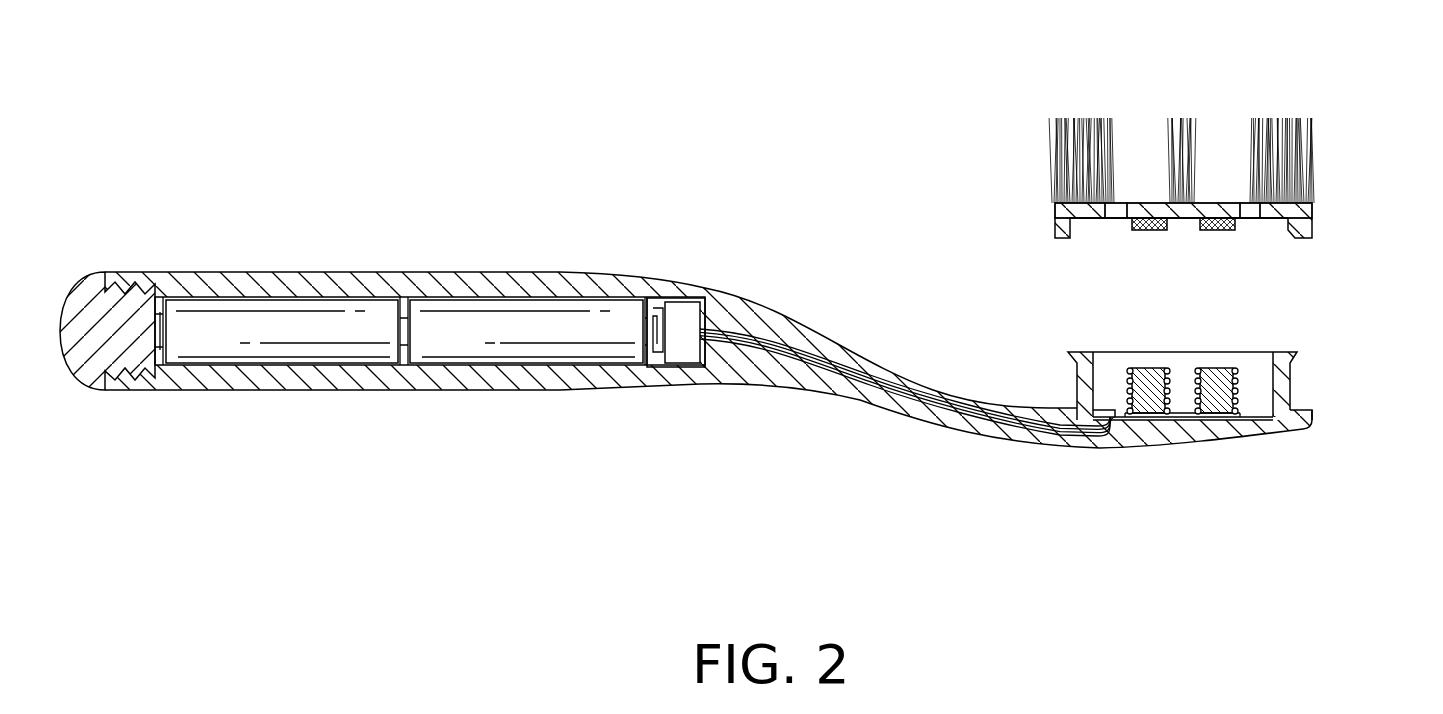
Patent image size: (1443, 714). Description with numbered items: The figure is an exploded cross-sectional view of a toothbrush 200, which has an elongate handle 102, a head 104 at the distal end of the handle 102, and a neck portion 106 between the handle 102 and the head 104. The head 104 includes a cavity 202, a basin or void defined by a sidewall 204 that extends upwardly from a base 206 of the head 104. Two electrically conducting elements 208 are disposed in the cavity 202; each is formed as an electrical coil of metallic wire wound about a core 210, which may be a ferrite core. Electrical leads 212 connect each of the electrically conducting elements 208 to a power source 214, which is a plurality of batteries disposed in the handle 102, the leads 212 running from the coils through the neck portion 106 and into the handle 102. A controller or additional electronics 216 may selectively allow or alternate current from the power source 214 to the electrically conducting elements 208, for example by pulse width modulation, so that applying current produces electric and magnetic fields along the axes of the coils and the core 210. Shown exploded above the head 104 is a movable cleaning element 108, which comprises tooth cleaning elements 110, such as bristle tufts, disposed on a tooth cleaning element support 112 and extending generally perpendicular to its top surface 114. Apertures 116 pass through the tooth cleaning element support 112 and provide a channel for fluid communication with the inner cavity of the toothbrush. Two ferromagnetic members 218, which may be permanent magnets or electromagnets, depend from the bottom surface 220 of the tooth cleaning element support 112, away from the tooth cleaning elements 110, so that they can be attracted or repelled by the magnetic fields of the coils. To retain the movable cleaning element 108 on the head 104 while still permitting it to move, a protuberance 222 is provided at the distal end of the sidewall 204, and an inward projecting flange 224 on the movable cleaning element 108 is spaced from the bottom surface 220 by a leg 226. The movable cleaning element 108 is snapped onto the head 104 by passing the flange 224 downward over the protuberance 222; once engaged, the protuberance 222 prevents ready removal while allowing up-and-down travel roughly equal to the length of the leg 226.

The toothbrush 200 is at (185, 206).
The handle 102 is at (262, 275).
The head 104 is at (1312, 453).
The neck portion 106 is at (858, 398).
The movable cleaning element 108 is at (1023, 158).
The tooth cleaning elements 110 is at (1313, 136).
The tooth cleaning element support 112 is at (1062, 210).
The top surface 114 is at (1212, 203).
The apertures 116 is at (1117, 205).
The cavity 202 is at (1187, 392).
The sidewall 204 is at (1290, 380).
The base 206 is at (1253, 437).
The electrically conducting elements 208 is at (1307, 428).
The core 210 is at (1222, 365).
The leads 212 is at (770, 340).
The power source 214 is at (452, 328).
The controller 216 is at (676, 315).
The ferromagnetic members 218 is at (1212, 232).
The bottom surface 220 is at (1100, 220).
The protuberance 222 is at (1083, 355).
The inward projecting flange 224 is at (1080, 238).
The leg 226 is at (1312, 222).